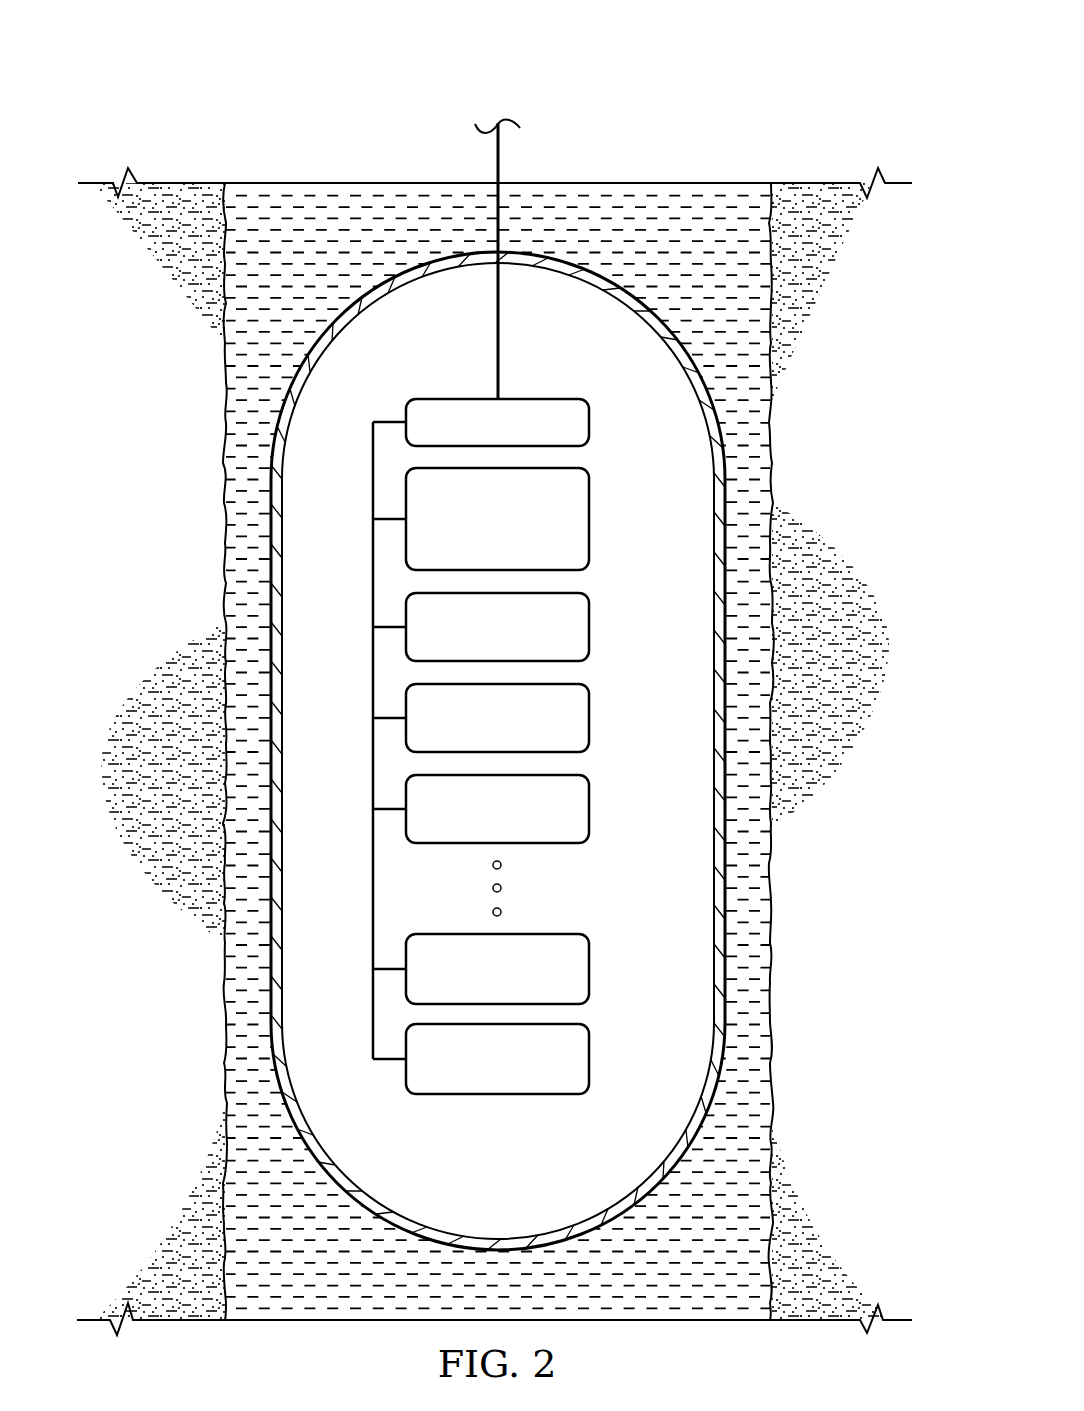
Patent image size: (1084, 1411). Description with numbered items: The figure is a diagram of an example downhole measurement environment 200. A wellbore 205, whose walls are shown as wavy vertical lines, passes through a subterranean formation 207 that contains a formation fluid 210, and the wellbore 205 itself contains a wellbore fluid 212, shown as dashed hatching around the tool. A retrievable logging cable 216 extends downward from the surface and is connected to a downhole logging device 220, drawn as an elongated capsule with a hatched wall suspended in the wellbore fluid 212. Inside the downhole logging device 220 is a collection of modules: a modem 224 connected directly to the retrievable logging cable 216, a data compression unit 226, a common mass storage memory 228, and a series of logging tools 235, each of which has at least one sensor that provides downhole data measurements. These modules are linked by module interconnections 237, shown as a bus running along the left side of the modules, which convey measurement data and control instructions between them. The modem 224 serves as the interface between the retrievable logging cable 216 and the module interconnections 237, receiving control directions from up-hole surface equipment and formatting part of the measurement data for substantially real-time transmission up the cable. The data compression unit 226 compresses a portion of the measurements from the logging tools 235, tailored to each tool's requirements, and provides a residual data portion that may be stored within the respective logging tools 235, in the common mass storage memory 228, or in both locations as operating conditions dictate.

The downhole measurement environment 200 is at (344, 63).
The wellbore 205 is at (220, 480).
The subterranean formation 207 is at (886, 403).
The formation fluid 210 is at (154, 785).
The wellbore fluid 212 is at (327, 190).
The retrievable logging cable 216 is at (500, 167).
The downhole logging device 220 is at (615, 288).
The modem 224 is at (590, 408).
The data compression unit 226 is at (590, 505).
The common mass storage memory 228 is at (590, 614).
The logging tools 235 is at (590, 708).
The module interconnections 237 is at (372, 878).